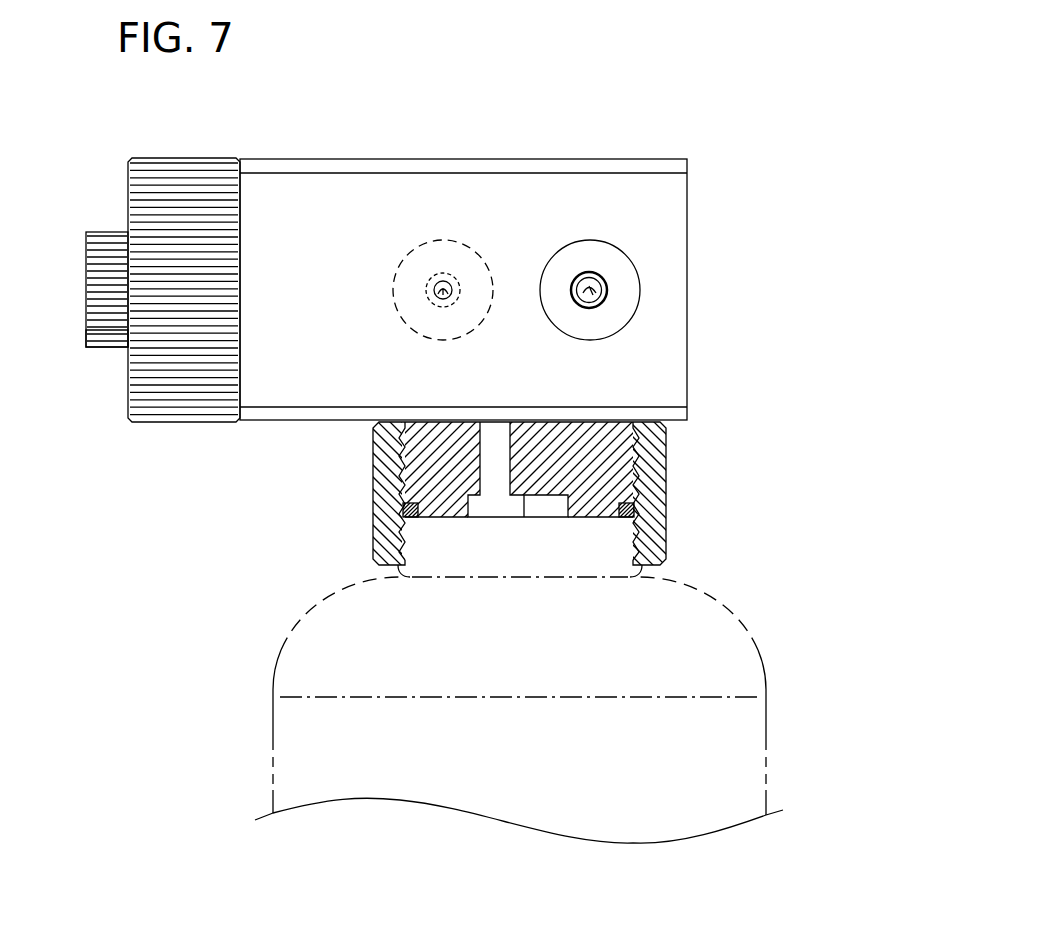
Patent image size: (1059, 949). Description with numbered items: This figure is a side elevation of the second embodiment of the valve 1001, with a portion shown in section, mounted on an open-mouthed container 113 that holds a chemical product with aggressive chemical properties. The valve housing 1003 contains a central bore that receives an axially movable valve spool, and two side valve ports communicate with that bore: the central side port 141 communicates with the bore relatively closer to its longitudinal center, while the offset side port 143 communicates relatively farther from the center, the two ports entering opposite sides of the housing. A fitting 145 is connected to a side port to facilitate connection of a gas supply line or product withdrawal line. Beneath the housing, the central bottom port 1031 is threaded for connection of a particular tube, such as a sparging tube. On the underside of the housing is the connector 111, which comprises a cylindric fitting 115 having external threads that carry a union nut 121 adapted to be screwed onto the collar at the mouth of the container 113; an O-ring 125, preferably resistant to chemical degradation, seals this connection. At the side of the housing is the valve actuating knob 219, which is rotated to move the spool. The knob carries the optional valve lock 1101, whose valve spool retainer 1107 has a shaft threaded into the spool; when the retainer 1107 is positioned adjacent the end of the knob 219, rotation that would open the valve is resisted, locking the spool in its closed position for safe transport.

The valve 1001 is at (680, 108).
The valve housing 1003 is at (517, 177).
The valve actuating knob 219 is at (170, 158).
The valve lock 1101 is at (76, 275).
The valve spool retainer 1107 is at (86, 333).
The central side port 141 is at (447, 273).
The offset side port 143 is at (598, 277).
The fitting 145 is at (627, 290).
The connector 111 is at (686, 499).
The cylindric fitting 115 is at (628, 423).
The union nut 121 is at (380, 445).
The O-ring 125 is at (408, 508).
The central bottom port 1031 is at (493, 452).
The container 113 is at (273, 722).